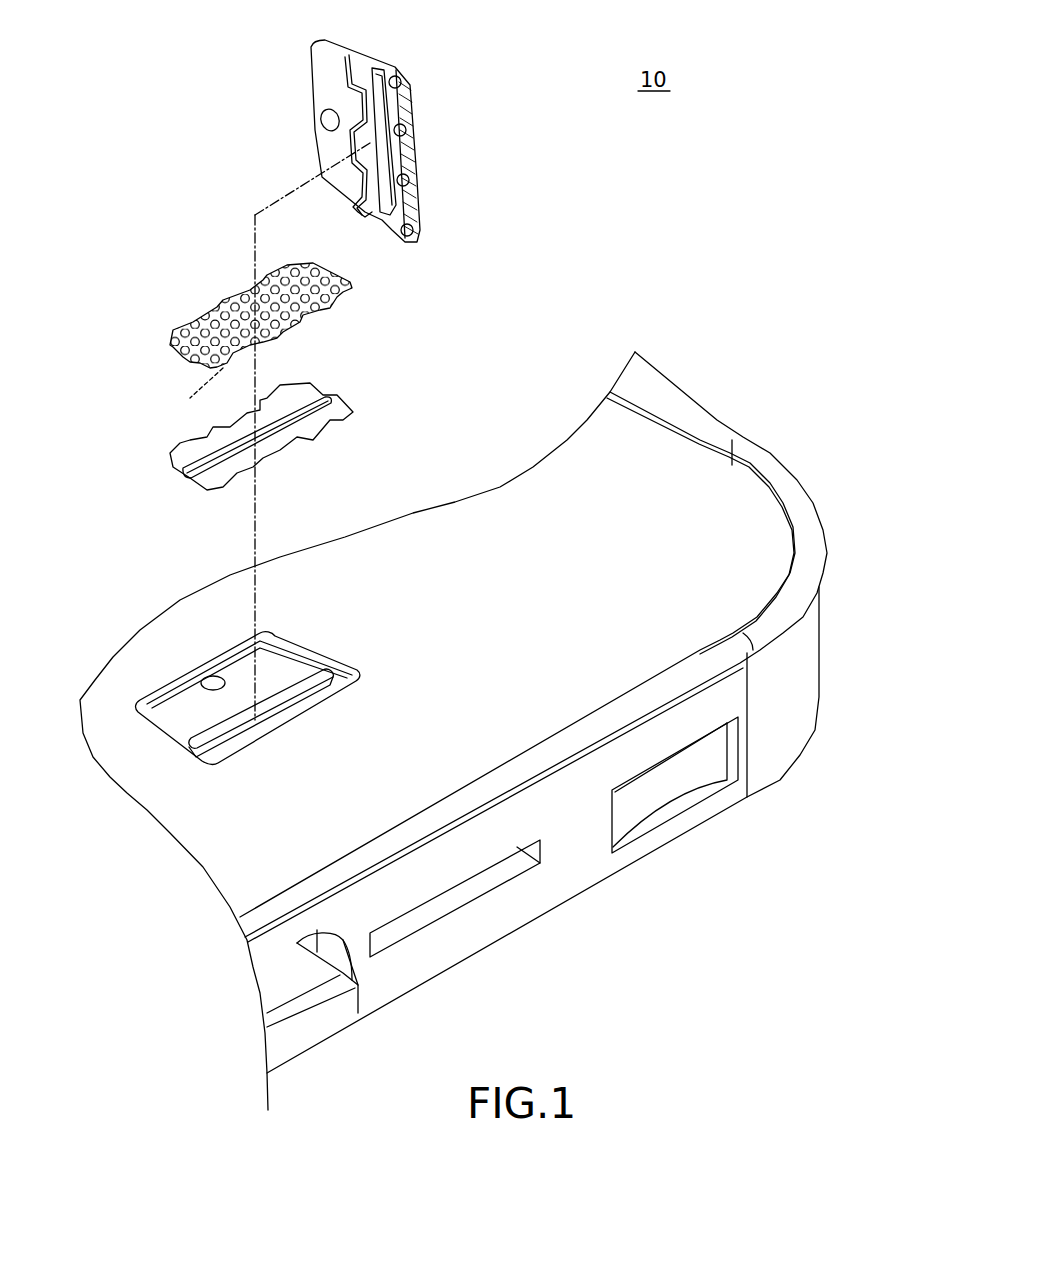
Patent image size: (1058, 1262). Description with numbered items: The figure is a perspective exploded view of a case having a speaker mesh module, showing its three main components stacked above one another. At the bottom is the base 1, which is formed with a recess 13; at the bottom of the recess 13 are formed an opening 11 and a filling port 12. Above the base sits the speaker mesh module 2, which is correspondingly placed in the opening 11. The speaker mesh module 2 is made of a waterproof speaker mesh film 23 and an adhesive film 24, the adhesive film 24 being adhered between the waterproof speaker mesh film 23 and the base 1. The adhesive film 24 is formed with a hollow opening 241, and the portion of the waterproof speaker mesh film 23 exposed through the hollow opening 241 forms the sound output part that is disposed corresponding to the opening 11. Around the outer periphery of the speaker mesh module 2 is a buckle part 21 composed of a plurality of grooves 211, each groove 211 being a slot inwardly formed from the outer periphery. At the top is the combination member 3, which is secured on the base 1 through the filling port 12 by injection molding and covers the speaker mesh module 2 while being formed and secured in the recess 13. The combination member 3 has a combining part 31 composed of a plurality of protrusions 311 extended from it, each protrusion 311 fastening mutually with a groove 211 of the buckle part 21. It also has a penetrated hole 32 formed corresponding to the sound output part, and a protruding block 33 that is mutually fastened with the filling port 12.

The base 1 is at (655, 480).
The opening 11 is at (323, 673).
The filling port 12 is at (205, 670).
The recess 13 is at (287, 643).
The speaker mesh module 2 is at (485, 262).
The buckle part 21 is at (316, 321).
The groove 211 is at (245, 412).
The waterproof speaker mesh film 23 is at (355, 290).
The adhesive film 24 is at (353, 405).
The hollow opening 241 is at (173, 455).
The combination member 3 is at (378, 130).
The combining part 31 is at (400, 70).
The protrusion 311 is at (350, 97).
The penetrated hole 32 is at (398, 152).
The protruding block 33 is at (321, 125).